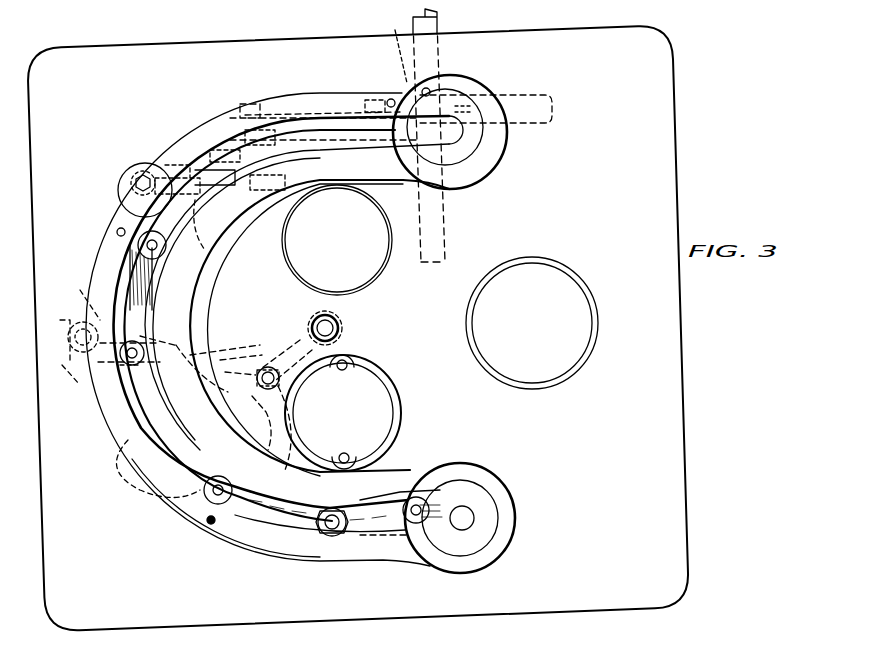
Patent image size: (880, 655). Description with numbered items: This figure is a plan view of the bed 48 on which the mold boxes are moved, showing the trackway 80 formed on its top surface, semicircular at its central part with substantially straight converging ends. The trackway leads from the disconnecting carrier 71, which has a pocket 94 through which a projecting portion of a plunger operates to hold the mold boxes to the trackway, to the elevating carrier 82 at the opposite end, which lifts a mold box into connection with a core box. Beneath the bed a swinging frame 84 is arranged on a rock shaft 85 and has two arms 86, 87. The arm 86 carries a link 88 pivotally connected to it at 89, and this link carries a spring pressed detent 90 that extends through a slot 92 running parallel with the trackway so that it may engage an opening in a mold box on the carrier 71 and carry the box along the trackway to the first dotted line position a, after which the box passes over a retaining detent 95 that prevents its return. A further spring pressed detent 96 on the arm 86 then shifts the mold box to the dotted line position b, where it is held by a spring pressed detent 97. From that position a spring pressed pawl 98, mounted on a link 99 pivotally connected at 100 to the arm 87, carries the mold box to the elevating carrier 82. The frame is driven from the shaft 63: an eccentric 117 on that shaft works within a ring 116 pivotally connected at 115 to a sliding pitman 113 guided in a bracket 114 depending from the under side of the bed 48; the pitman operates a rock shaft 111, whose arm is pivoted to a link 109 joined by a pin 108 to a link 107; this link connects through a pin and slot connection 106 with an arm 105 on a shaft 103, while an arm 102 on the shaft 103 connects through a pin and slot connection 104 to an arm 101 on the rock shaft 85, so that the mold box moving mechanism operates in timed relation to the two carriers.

The bed 48 is at (358, 328).
The trackway 80 is at (138, 408).
The elevating carrier 82 is at (463, 96).
The disconnecting carrier 71 is at (478, 488).
The pocket 94 is at (441, 527).
The shaft 63 is at (440, 24).
The bracket 114 is at (386, 48).
The pivot 89 is at (330, 510).
The rock shaft 85 is at (335, 327).
The swinging frame 84 is at (272, 365).
The arm 101 is at (292, 333).
The pin and slot connection 104 is at (255, 360).
The arm 87 is at (204, 350).
The arm 102 is at (189, 330).
The arm 86 is at (260, 433).
The spring pressed pawl 98 is at (147, 247).
The spring pressed detent 97 is at (119, 230).
The link 99 is at (140, 278).
The spring pressed detent 96 is at (213, 497).
The retaining detent 95 is at (212, 524).
The link 88 is at (383, 507).
The slot 92 is at (383, 490).
The spring pressed detent 90 is at (420, 500).
The shaft 103 is at (92, 346).
The pivot 100 is at (113, 383).
The arm 105 is at (86, 288).
The first dotted line position a is at (157, 505).
The pin and slot connection 106 is at (135, 168).
The second dotted line position b is at (150, 160).
The link 107 is at (166, 165).
The pin 108 is at (203, 160).
The link 109 is at (242, 205).
The rock shaft 111 is at (252, 103).
The sliding pitman 113 is at (307, 113).
The pivot 115 is at (372, 103).
The ring 116 is at (527, 95).
The eccentric 117 is at (538, 123).